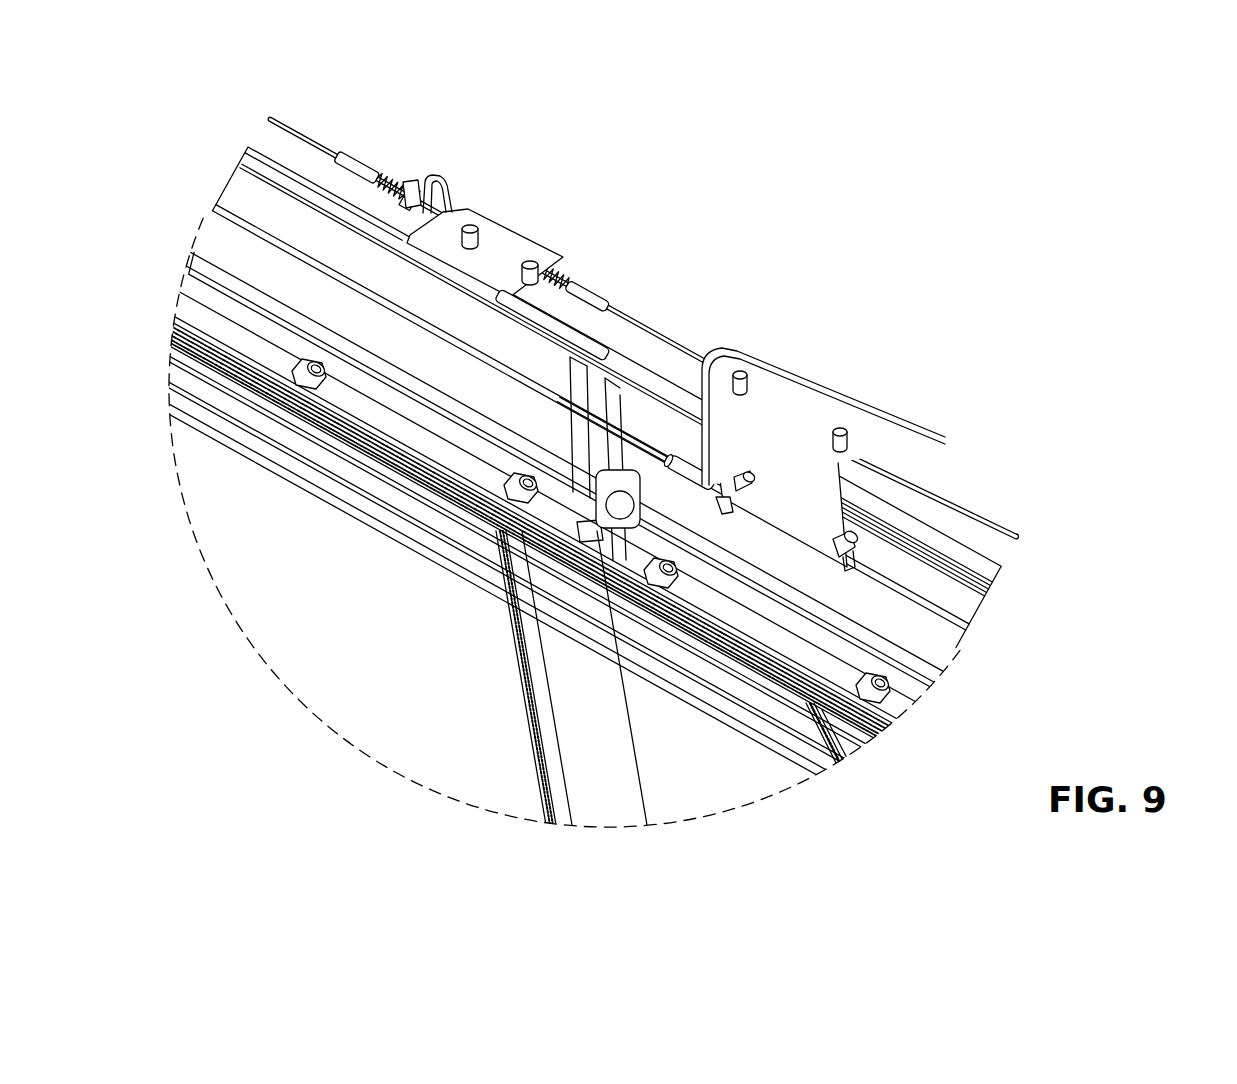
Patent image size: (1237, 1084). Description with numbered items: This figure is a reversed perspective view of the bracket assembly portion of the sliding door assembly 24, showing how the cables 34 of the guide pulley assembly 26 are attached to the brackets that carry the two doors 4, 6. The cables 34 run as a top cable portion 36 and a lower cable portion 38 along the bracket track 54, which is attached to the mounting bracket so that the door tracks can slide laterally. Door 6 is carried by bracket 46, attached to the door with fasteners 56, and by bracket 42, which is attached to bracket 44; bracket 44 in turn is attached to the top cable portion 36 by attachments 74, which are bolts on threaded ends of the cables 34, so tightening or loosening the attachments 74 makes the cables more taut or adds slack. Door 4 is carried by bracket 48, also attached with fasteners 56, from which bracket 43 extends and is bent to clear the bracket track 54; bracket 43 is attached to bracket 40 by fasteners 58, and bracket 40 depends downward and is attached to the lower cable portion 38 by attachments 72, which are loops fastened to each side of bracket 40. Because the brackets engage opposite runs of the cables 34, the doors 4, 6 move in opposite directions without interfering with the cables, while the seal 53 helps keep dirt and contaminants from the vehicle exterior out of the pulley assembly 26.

The door 4 is at (773, 733).
The door 6 is at (502, 672).
The sliding door assembly 24 is at (564, 522).
The guide pulley assembly 26 is at (772, 406).
The cables 34 is at (617, 324).
The top cable portion 36 is at (602, 397).
The lower cable portion 38 is at (640, 427).
The bracket 40 is at (832, 438).
The bracket 42 is at (455, 166).
The bracket 43 is at (818, 387).
The bracket 44 is at (497, 239).
The bracket 46 is at (530, 527).
The bracket 48 is at (528, 546).
The seal 53 is at (516, 585).
The bracket track 54 is at (580, 441).
The fasteners 56 is at (616, 569).
The fasteners 58 is at (828, 395).
The attachments 72 is at (827, 542).
The attachments 74 is at (587, 285).